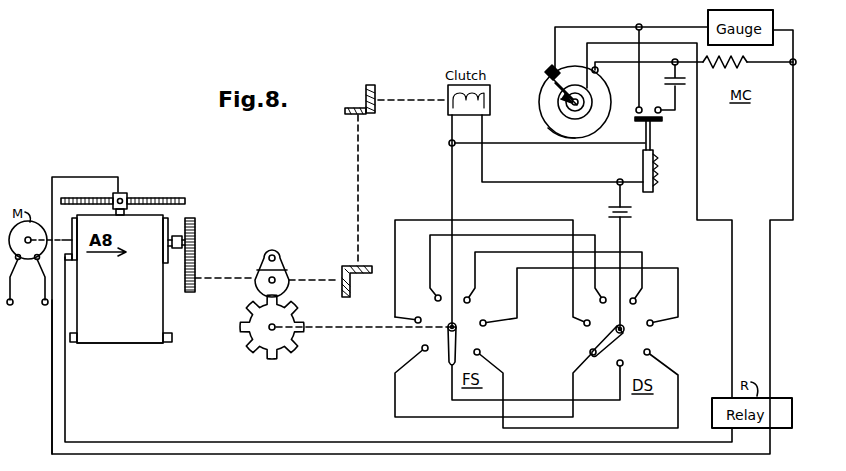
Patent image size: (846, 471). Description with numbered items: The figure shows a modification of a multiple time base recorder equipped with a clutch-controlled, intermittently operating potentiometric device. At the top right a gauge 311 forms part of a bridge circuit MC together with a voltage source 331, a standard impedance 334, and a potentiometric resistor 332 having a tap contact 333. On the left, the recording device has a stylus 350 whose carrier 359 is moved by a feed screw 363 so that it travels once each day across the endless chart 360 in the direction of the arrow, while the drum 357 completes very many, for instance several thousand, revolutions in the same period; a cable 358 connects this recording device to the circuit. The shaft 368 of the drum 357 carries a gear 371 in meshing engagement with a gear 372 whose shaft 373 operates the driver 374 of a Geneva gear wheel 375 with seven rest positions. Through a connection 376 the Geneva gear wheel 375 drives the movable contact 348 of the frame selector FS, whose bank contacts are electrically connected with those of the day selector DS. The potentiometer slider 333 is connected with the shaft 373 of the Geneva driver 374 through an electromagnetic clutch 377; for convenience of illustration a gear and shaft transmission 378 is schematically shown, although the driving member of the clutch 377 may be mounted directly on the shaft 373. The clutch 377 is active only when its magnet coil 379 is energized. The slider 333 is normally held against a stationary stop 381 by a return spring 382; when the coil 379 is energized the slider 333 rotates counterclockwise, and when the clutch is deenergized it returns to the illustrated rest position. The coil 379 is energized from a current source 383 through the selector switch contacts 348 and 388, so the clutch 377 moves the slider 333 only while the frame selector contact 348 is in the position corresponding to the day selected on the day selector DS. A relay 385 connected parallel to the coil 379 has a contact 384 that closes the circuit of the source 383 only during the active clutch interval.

The gauge 311 is at (708, 23).
The voltage source 331 is at (678, 105).
The potentiometric resistor 332 is at (546, 129).
The tap contact 333 is at (548, 76).
The standard impedance 334 is at (740, 64).
The movable contact 348 is at (453, 327).
The stylus 350 is at (121, 214).
The drum 357 is at (163, 266).
The cable 358 is at (66, 388).
The carrier 359 is at (124, 193).
The endless chart 360 is at (127, 337).
The feed screw 363 is at (172, 200).
The shaft 368 is at (184, 246).
The gear 371 is at (195, 233).
The gear 372 is at (189, 295).
The shaft 373 is at (299, 283).
The driver 374 is at (277, 256).
The Geneva gear wheel 375 is at (262, 358).
The shaft 376 is at (352, 330).
The electromagnetic clutch 377 is at (448, 94).
The gear and shaft transmission 378 is at (359, 192).
The magnet coil 379 is at (456, 104).
The stationary stop 381 is at (568, 82).
The return spring 382 is at (596, 108).
The current source 383 is at (630, 217).
The contact 384 is at (650, 135).
The relay 385 is at (642, 158).
The selector switch contact 388 is at (610, 343).